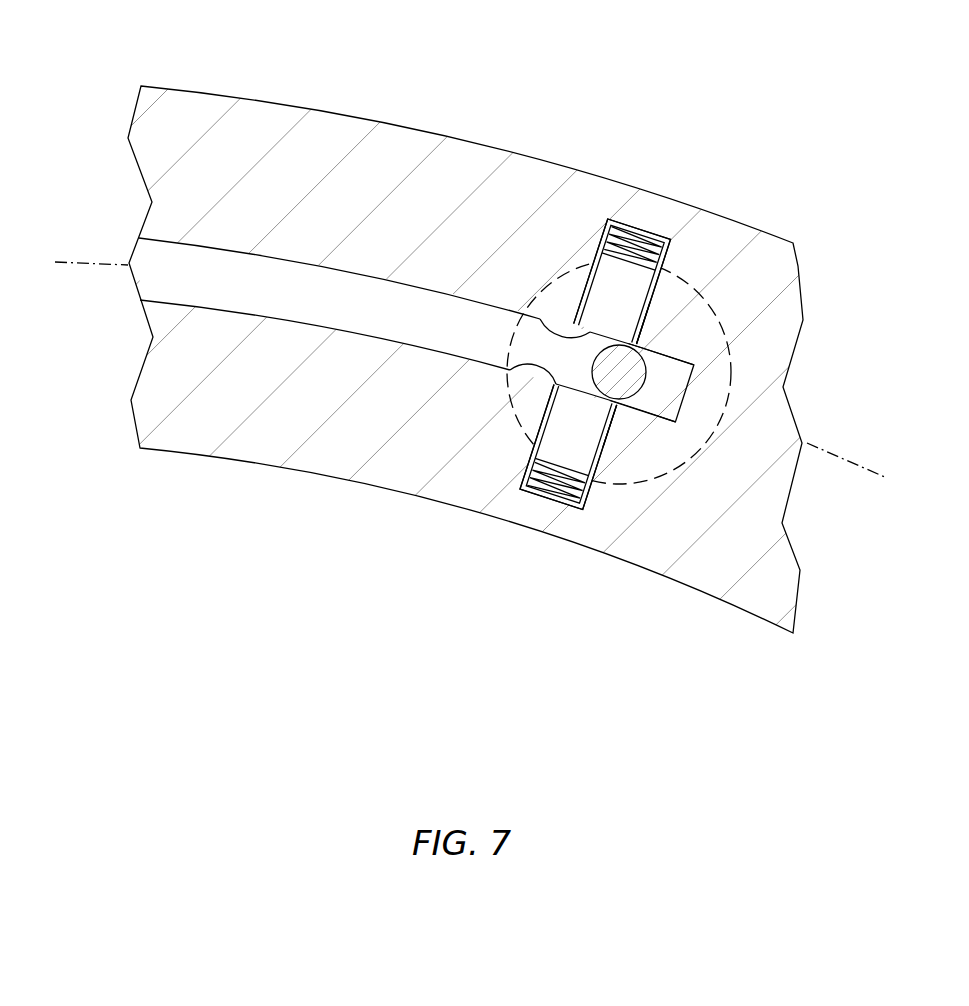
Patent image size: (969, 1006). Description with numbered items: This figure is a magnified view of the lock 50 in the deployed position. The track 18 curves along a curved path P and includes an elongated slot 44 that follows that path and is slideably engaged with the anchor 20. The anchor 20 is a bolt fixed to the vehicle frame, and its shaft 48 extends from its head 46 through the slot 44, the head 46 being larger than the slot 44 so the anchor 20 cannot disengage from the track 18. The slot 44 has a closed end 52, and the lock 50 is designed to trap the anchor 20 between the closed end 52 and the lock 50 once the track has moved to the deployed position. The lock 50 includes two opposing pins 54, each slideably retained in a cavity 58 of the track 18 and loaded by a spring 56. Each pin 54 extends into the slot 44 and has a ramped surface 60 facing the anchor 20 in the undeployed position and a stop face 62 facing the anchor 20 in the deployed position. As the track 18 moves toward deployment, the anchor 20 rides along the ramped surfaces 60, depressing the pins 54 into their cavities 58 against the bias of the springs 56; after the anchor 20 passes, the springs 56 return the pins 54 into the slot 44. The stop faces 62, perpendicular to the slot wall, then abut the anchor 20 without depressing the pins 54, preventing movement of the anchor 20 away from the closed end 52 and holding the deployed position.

The track 18 is at (267, 128).
The anchor 20 is at (487, 332).
The slot 44 is at (302, 330).
The head 46 is at (713, 307).
The shaft 48 is at (625, 377).
The lock 50 is at (591, 224).
The closed end 52 is at (685, 407).
The pin 54 is at (623, 297).
The spring 56 is at (637, 230).
The cavity 58 is at (583, 300).
The ramped surface 60 is at (540, 323).
The stop face 62 is at (640, 335).
The curved path P is at (460, 365).